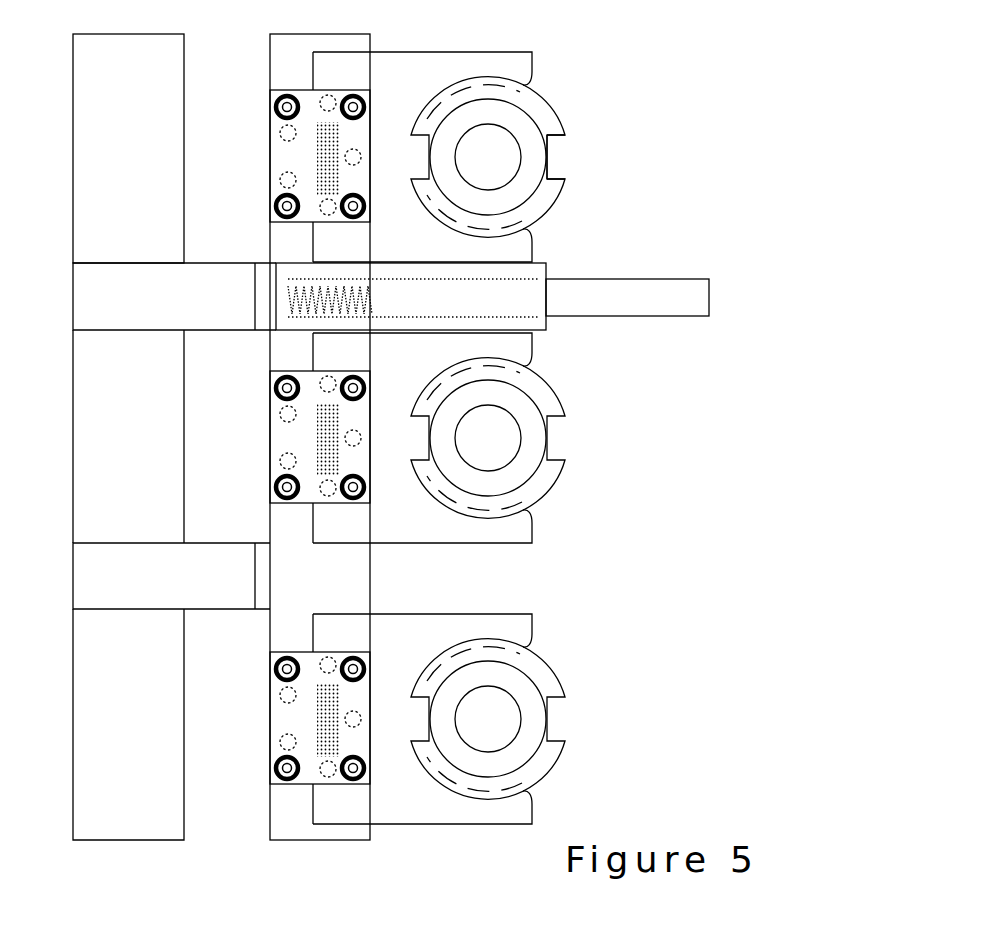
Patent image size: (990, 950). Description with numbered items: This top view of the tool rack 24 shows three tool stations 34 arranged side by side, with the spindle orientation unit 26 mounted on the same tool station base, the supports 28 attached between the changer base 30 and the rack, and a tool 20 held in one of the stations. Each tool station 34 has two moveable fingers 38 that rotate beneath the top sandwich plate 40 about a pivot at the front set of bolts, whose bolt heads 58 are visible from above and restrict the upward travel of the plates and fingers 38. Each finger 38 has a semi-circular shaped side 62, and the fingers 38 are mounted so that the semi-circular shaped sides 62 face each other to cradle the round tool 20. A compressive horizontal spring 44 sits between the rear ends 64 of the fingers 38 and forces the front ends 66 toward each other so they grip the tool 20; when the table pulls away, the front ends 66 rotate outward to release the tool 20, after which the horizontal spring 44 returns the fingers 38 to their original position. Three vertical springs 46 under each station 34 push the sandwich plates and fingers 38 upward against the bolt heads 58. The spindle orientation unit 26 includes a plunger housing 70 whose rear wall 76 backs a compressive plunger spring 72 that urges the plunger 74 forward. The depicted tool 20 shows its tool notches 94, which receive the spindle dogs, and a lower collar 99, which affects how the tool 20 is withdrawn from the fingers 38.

The tool 20 is at (513, 125).
The tool rack 24 is at (885, 585).
The spindle orientation unit 26 is at (745, 300).
The supports 28 is at (145, 312).
The changer base 30 is at (145, 155).
The tool station 34 is at (730, 150).
The moveable fingers 38 is at (419, 99).
The top sandwich plate 40 is at (324, 731).
The horizontal spring 44 is at (320, 717).
The vertical springs 46 is at (277, 690).
The bolt heads 58 is at (352, 665).
The semi-circular shaped side 62 is at (485, 513).
The rear ends 64 is at (342, 526).
The front ends 66 is at (500, 537).
The plunger housing 70 is at (413, 297).
The plunger spring 72 is at (295, 285).
The plunger 74 is at (653, 305).
The rear wall 76 is at (275, 330).
The tool notches 94 is at (555, 157).
The lower collar 99 is at (558, 128).